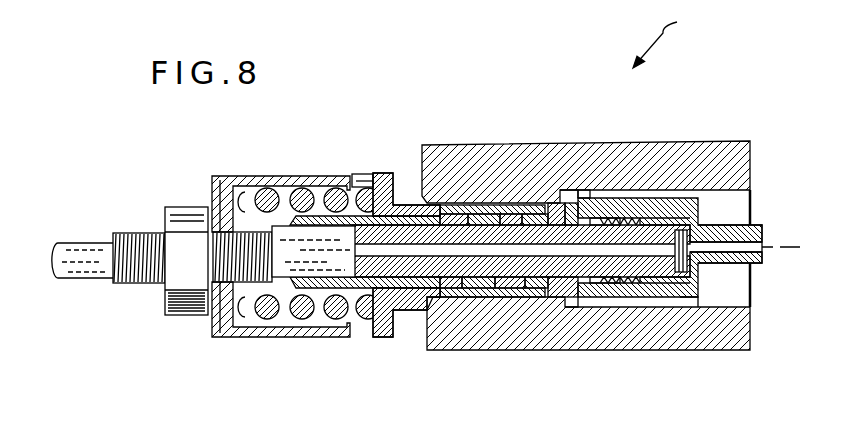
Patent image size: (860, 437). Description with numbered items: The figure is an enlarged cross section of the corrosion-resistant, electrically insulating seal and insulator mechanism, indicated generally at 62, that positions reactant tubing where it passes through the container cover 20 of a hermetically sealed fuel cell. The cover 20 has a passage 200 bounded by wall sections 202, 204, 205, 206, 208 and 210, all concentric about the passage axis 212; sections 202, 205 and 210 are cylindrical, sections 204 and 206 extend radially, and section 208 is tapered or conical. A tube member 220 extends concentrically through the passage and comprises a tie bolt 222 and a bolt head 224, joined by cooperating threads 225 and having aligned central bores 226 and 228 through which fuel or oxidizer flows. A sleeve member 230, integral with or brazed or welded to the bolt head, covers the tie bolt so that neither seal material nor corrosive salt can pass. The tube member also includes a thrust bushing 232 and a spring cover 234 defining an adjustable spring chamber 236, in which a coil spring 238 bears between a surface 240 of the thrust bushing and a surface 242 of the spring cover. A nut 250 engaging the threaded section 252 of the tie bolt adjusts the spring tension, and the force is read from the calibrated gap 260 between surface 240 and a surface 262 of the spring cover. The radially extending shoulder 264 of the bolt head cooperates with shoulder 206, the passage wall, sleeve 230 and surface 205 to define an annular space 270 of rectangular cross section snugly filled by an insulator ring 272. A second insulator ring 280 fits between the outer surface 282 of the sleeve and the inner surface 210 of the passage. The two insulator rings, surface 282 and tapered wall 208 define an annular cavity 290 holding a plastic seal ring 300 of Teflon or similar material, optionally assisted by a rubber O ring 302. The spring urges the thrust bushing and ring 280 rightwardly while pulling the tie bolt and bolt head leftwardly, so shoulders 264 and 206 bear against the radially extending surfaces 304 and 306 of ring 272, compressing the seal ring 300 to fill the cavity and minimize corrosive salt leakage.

The container cover 20 is at (747, 343).
The valve assembly 62 is at (672, 36).
The passage 200 is at (692, 197).
The container cover wall section 202 is at (645, 226).
The container cover wall section 204 is at (583, 190).
The container cover wall section 205 is at (563, 207).
The radially extending shoulder 206 is at (556, 207).
The tapered wall section 208 is at (513, 207).
The cylindrical wall section 210 is at (443, 207).
The passage axis 212 is at (776, 240).
The tube member 220 is at (688, 303).
The tie bolt 222 is at (125, 234).
The bolt head 224 is at (688, 281).
The cooperating threads 225 is at (703, 197).
The bore 226 is at (660, 220).
The bore 228 is at (717, 226).
The sleeve member 230 is at (518, 295).
The thrust bushing 232 is at (390, 338).
The spring cover 234 is at (235, 177).
The adjustable spring chamber 236 is at (288, 190).
The coil spring 238 is at (265, 193).
The surface of thrust bushing 240 is at (362, 174).
The surface of spring cover 242 is at (217, 178).
The nut 250 is at (185, 210).
The threaded section 252 is at (112, 240).
The gap 260 is at (378, 175).
The surface of spring cover 262 is at (357, 181).
The radially extending shoulder 264 is at (637, 230).
The annular space 270 is at (570, 305).
The insulator ring 272 is at (592, 190).
The insulator ring 280 is at (448, 295).
The outer surface of sleeve 282 is at (490, 295).
The annular cavity 290 is at (487, 207).
The plastic seal ring 300 is at (540, 207).
The rubber O ring 302 is at (463, 207).
The radially extending surface of insulator ring 304 is at (603, 300).
The radially extending surface of insulator ring 306 is at (536, 295).